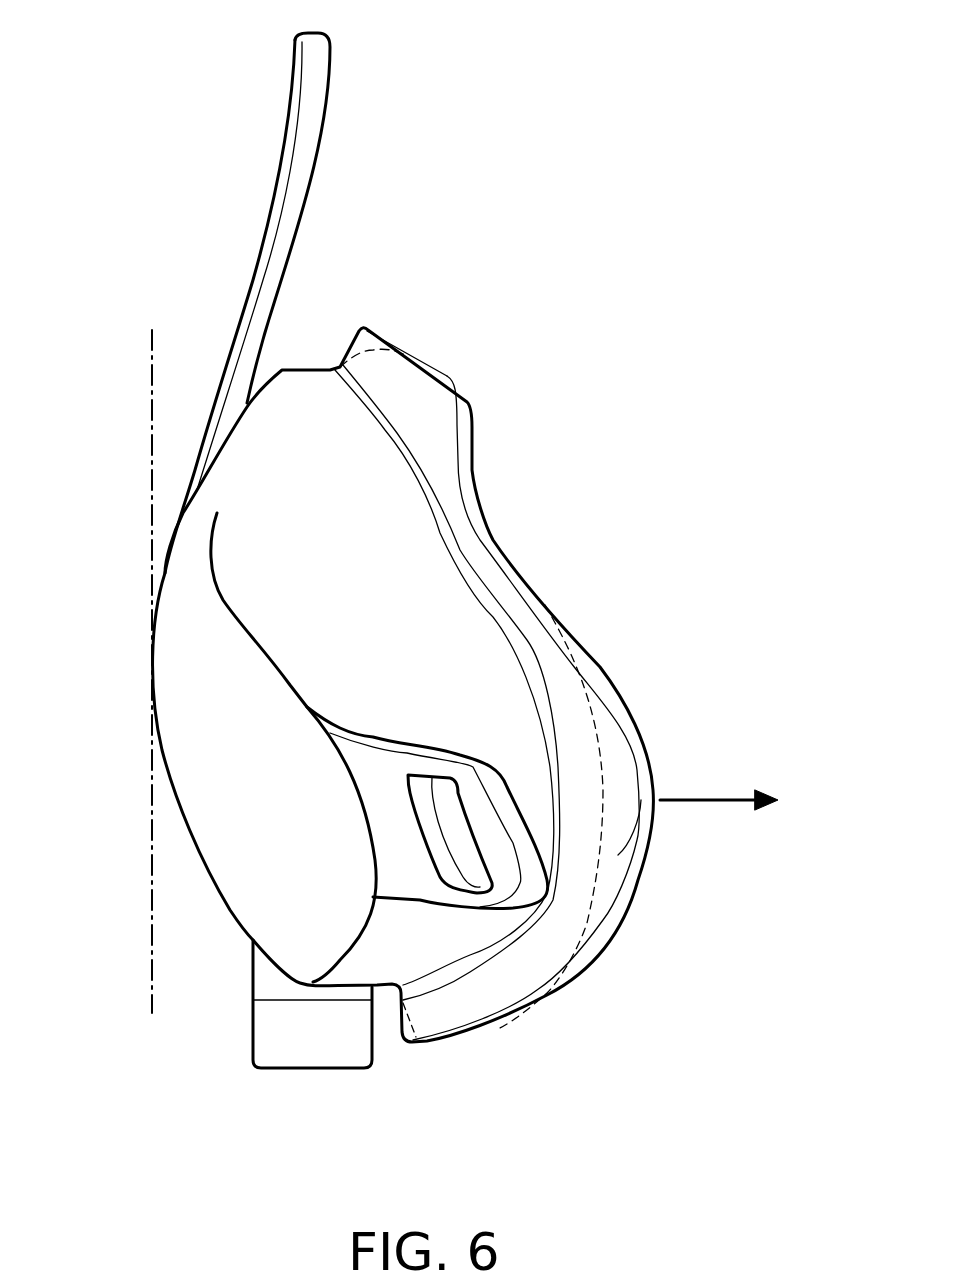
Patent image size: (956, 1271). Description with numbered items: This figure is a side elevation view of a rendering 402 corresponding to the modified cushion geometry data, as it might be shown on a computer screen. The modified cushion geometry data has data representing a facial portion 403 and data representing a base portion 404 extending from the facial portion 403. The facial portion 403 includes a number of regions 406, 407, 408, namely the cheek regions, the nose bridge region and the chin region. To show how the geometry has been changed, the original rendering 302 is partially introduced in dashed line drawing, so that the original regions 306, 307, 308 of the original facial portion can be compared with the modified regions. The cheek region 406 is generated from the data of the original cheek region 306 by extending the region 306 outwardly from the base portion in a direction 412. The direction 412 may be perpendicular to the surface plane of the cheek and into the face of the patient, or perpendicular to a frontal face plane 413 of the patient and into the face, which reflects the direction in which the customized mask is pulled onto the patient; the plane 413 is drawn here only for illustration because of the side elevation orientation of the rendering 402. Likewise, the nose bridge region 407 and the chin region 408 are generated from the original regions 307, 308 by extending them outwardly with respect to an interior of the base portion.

The rendering 402 is at (606, 262).
The facial portion 403 is at (473, 503).
The base portion 404 is at (313, 645).
The region 406 is at (618, 855).
The region 407 is at (372, 343).
The region 408 is at (402, 1043).
The direction 412 is at (720, 802).
The frontal face plane 413 is at (150, 436).
The rendering 302 is at (606, 723).
The region 306 is at (603, 781).
The region 307 is at (372, 352).
The region 308 is at (405, 1040).